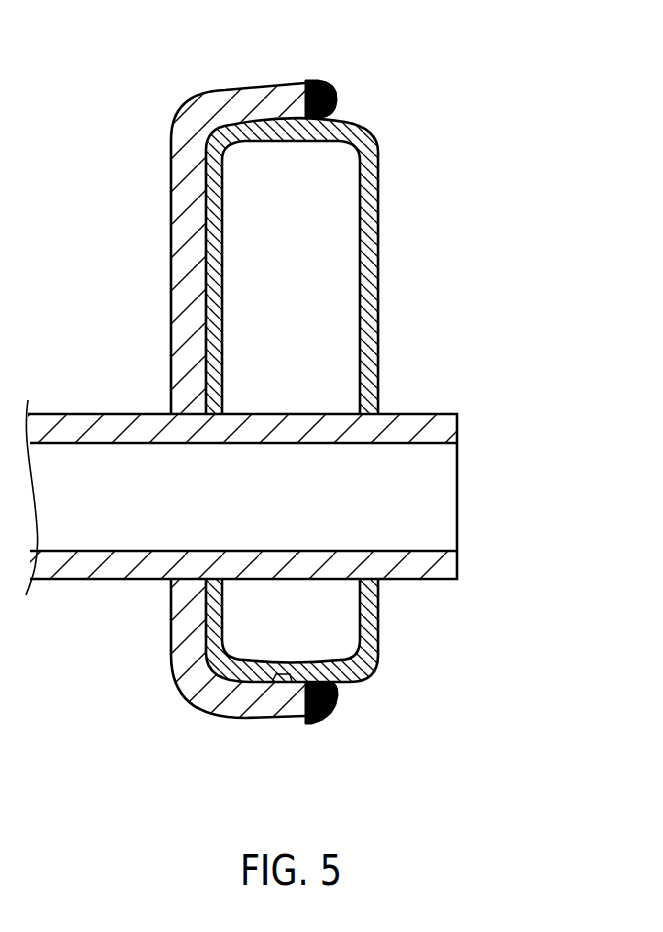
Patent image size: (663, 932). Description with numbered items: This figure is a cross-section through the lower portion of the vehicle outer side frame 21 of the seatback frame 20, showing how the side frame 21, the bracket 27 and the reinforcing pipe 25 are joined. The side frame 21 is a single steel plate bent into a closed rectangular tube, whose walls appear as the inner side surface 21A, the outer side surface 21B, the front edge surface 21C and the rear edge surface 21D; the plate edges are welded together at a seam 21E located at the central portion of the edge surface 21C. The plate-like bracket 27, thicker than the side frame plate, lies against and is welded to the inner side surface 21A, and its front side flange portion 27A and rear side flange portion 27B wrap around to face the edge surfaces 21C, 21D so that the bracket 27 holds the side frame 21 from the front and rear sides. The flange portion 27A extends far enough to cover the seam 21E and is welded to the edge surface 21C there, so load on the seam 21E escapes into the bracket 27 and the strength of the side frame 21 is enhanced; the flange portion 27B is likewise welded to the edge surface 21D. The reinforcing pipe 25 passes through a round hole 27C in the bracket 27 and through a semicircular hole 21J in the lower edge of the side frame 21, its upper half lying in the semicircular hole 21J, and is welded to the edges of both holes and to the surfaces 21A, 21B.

The seatback frame 20 is at (299, 425).
The side frame 21 is at (299, 425).
The inner side surface 21A is at (212, 272).
The outer side surface 21B is at (377, 268).
The edge surface 21C is at (218, 712).
The rear edge surface 21D is at (340, 133).
The seam 21E is at (282, 673).
The semicircular hole 21J is at (378, 416).
The reinforcing pipe 25 is at (455, 415).
The bracket 27 is at (205, 414).
The front side flange portion 27A is at (280, 703).
The rear side flange portion 27B is at (267, 110).
The round hole 27C is at (179, 583).